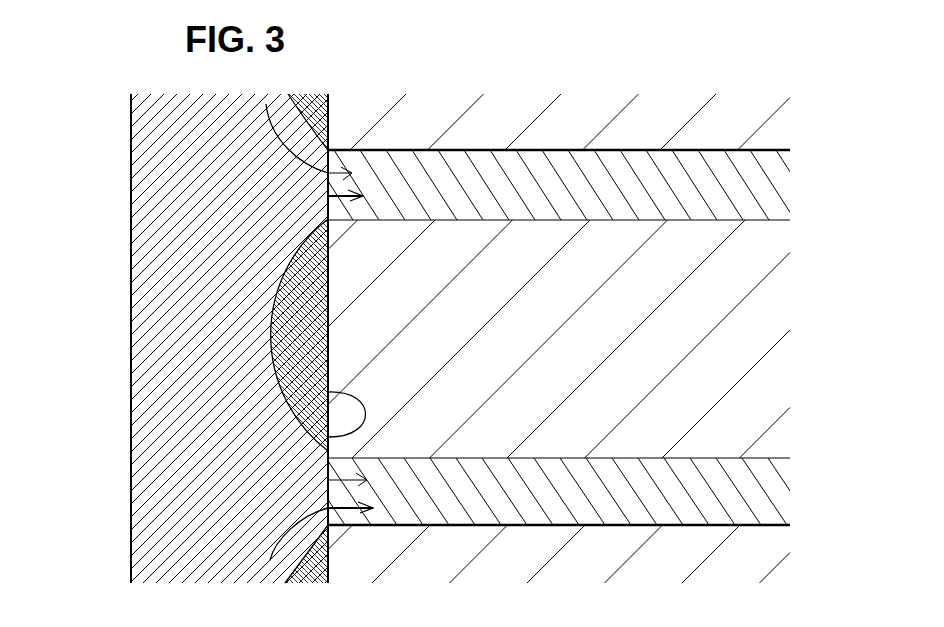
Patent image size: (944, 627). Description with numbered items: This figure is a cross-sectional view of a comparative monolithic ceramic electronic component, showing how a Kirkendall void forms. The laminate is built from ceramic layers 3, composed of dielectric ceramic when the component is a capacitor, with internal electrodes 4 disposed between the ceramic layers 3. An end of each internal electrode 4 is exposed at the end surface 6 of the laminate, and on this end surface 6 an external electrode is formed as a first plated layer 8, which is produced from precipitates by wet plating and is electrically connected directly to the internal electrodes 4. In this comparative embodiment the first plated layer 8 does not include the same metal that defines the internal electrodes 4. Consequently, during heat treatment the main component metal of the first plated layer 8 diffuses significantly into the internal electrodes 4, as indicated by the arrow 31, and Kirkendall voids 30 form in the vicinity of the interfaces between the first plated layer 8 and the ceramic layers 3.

The ceramic layers 3 is at (730, 116).
The internal electrodes 4 is at (725, 186).
The end surface 6 is at (323, 440).
The first plated layer 8 is at (210, 343).
The Kirkendall voids 30 is at (281, 280).
The arrow 31 is at (328, 196).